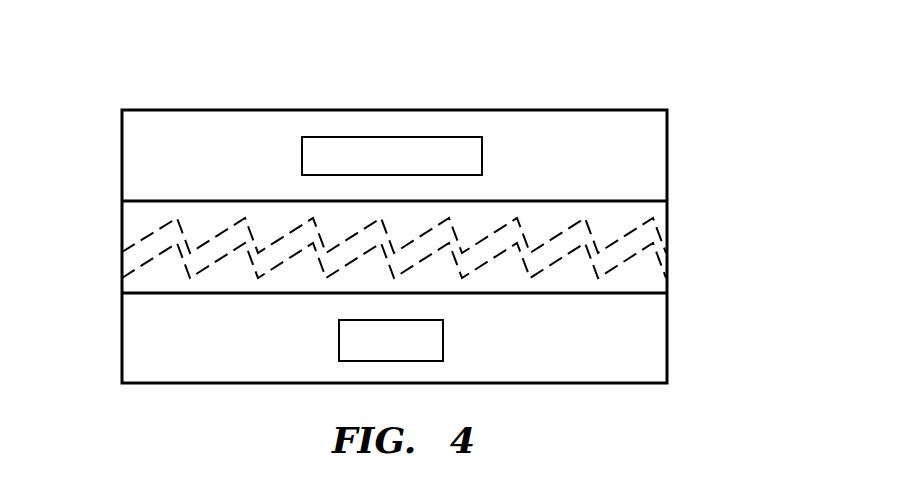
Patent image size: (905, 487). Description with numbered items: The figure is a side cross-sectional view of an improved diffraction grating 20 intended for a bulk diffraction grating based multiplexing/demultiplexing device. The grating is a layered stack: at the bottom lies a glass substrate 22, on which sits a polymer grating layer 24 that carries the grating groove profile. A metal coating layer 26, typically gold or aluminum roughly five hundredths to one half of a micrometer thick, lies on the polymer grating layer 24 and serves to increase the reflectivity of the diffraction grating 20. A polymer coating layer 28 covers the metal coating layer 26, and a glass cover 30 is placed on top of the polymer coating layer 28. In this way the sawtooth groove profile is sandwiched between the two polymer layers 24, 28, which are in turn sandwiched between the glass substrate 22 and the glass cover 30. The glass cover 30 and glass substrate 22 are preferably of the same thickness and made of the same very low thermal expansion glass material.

The improved diffraction grating 20 is at (646, 40).
The glass substrate 22 is at (642, 329).
The polymer grating layer 24 is at (137, 277).
The metal coating layer 26 is at (650, 236).
The polymer coating layer 28 is at (137, 231).
The glass cover 30 is at (650, 162).